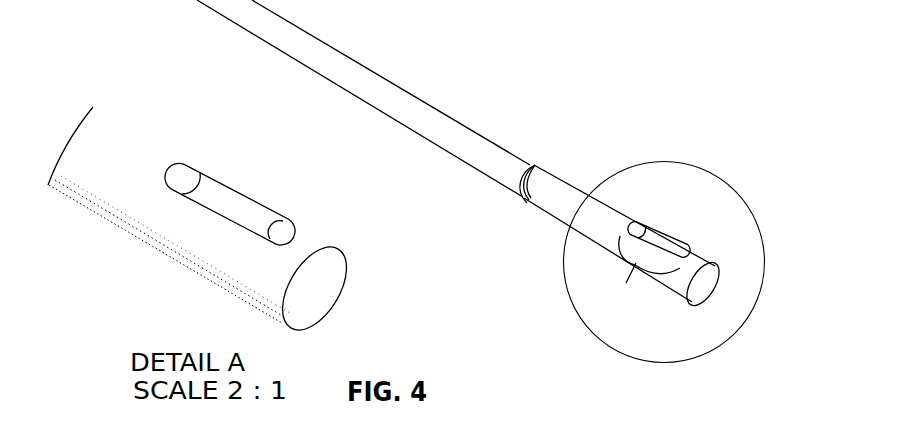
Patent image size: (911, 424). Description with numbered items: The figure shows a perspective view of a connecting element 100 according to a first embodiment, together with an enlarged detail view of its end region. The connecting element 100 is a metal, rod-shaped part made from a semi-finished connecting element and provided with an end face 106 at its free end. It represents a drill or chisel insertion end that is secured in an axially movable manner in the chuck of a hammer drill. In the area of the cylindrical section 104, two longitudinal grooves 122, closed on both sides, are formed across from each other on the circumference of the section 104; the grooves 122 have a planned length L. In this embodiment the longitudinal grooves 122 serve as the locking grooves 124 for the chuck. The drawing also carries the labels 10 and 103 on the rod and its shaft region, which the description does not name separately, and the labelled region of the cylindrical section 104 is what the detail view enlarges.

In FIG. 2, the distal end 10 is at (703, 280).
In FIG. 4, the connecting element 100 is at (149, 131).
In FIG. 2, the connecting element 100 is at (567, 163).
In FIG. 2, the shaft 103 is at (447, 113).
In FIG. 4, the cylindrical section 104 is at (213, 251).
In FIG. 2, the cylindrical section 104 is at (561, 198).
In FIG. 4, the end face 106 is at (314, 285).
In FIG. 4, the longitudinal grooves 122 is at (231, 209).
In FIG. 2, the longitudinal grooves 122 is at (660, 242).
In FIG. 4, the locking grooves 124 is at (258, 226).
In FIG. 2, the locking grooves 124 is at (672, 250).